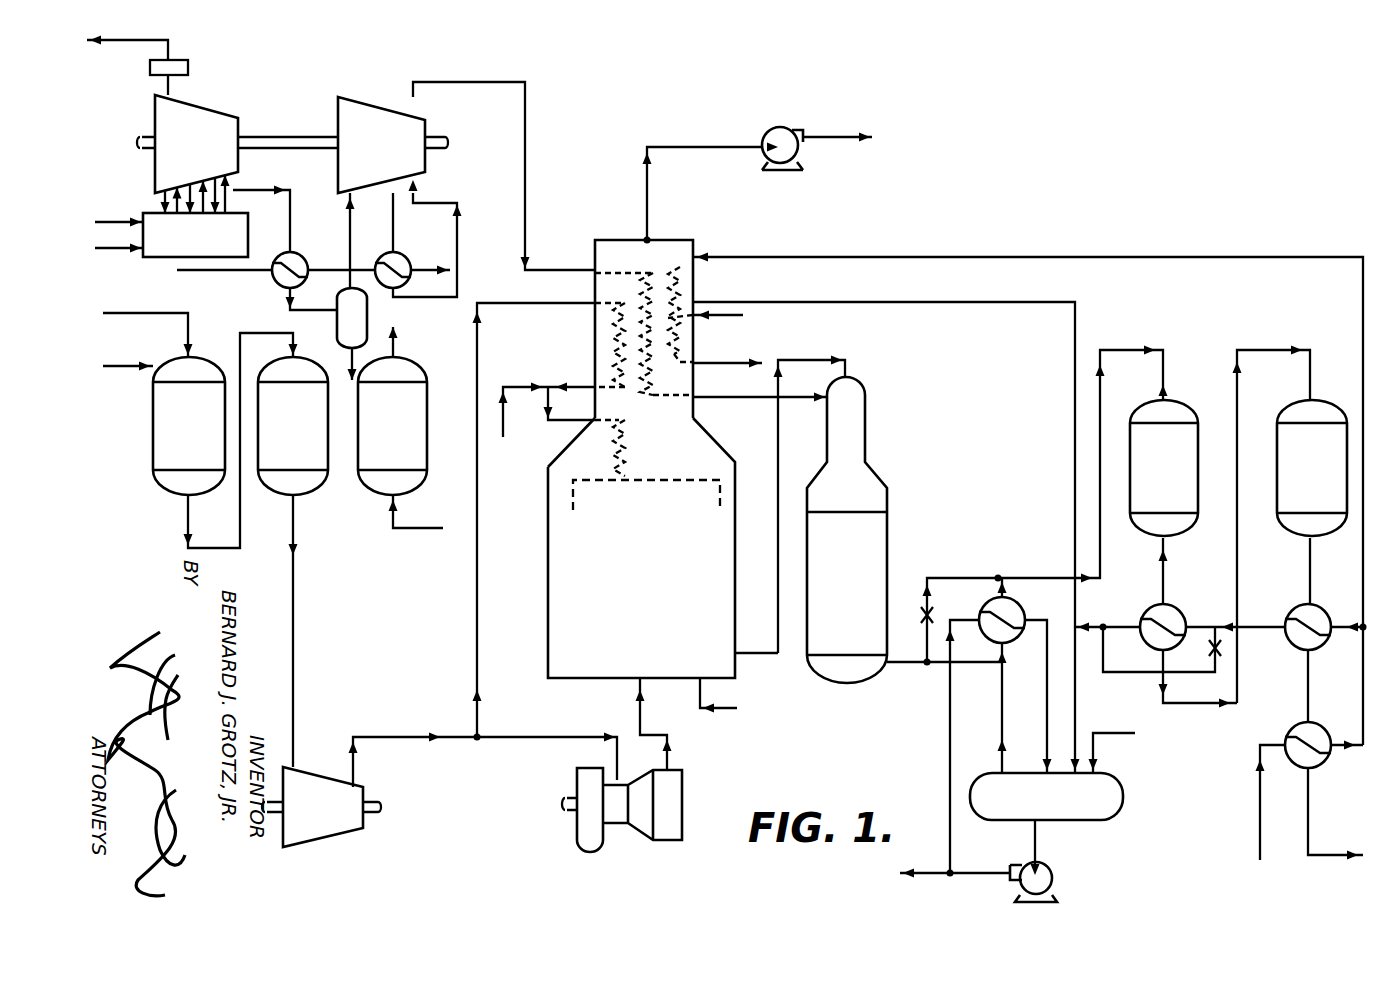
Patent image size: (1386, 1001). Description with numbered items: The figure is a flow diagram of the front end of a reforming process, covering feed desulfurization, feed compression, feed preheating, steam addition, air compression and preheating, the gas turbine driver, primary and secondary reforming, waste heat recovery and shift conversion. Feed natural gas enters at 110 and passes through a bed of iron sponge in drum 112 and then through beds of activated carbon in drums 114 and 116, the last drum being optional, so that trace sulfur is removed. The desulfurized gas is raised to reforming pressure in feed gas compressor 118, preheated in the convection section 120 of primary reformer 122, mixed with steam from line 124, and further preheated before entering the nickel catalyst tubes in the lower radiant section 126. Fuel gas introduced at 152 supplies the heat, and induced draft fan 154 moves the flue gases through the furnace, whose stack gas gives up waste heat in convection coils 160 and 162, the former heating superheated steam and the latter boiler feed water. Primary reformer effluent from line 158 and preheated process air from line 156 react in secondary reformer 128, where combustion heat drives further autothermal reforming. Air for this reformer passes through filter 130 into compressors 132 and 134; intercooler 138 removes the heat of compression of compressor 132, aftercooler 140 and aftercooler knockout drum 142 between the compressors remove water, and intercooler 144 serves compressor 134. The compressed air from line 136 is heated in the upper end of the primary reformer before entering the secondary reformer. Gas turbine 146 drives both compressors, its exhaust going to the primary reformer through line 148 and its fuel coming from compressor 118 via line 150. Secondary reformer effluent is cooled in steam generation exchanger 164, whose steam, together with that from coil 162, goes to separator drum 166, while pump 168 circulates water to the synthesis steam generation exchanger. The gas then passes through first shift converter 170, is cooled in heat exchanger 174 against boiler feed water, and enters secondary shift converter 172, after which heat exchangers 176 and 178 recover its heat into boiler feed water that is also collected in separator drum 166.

The feed natural gas inlet 110 is at (150, 313).
The iron sponge drum 112 is at (160, 408).
The activated carbon drum 114 is at (293, 562).
The activated carbon drum 116 is at (402, 395).
The feed gas compressor 118 is at (347, 820).
The convection section 120 is at (613, 320).
The primary reformer 122 is at (598, 238).
The steam line 124 is at (522, 385).
The lower radiant section 126 is at (573, 622).
The secondary reformer 128 is at (868, 408).
The filter 130 is at (188, 67).
The air compressor 132 is at (214, 118).
The air compressor 134 is at (372, 110).
The compressed air line 136 is at (500, 82).
The intercooler 138 is at (171, 216).
The aftercooler 140 is at (302, 253).
The aftercooler knockout drum 142 is at (340, 330).
The intercooler 144 is at (410, 260).
The gas turbine 146 is at (667, 827).
The turbine exhaust line 148 is at (655, 735).
The fuel gas line 150 is at (523, 733).
The fuel gas inlet 152 is at (722, 708).
The induced draft fan 154 is at (782, 133).
The process air line 156 is at (717, 400).
The primary reformer effluent line 158 is at (810, 357).
The convection coil 160 is at (680, 340).
The convection coil 162 is at (676, 262).
The steam generation exchanger 164 is at (1010, 602).
The separator drum 166 is at (1102, 805).
The pump 168 is at (1052, 880).
The first shift converter 170 is at (1178, 405).
The secondary shift converter 172 is at (1297, 410).
The heat exchanger 174 is at (1177, 613).
The heat exchanger 176 is at (1297, 612).
The heat exchanger 178 is at (1313, 763).